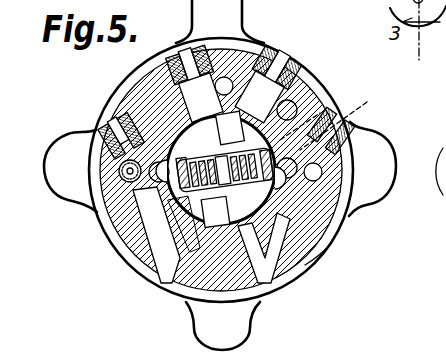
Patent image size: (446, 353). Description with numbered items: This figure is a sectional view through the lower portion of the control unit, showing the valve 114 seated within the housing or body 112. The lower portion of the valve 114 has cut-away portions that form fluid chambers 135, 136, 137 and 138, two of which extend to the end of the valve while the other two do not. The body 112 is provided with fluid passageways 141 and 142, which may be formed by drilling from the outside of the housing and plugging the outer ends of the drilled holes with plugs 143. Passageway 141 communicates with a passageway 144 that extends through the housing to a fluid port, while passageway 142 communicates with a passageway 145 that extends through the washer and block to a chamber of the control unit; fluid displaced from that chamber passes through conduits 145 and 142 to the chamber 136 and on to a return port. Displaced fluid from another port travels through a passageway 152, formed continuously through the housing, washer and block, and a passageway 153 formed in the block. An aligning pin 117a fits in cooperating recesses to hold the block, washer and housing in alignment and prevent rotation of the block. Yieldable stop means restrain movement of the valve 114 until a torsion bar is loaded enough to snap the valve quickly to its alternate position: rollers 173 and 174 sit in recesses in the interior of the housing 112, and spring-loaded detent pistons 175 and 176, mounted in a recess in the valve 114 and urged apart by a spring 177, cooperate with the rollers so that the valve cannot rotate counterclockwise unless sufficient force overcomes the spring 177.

The body 112 is at (157, 293).
The valve 114 is at (216, 114).
The aligning pin 117a is at (280, 88).
The fluid chamber 135 is at (165, 110).
The fluid chamber 136 is at (313, 98).
The fluid chamber 137 is at (190, 302).
The fluid chamber 138 is at (226, 77).
The fluid passageway 141 is at (190, 256).
The fluid passageway 142 is at (277, 247).
The plug 143 is at (172, 56).
The passageway 144 is at (120, 176).
The passageway 145 is at (316, 172).
The passageway 152 is at (214, 112).
The passageway 153 is at (332, 119).
The roller 173 is at (122, 206).
The roller 174 is at (322, 190).
The detent piston 175 is at (112, 142).
The detent piston 176 is at (337, 225).
The spring 177 is at (150, 223).